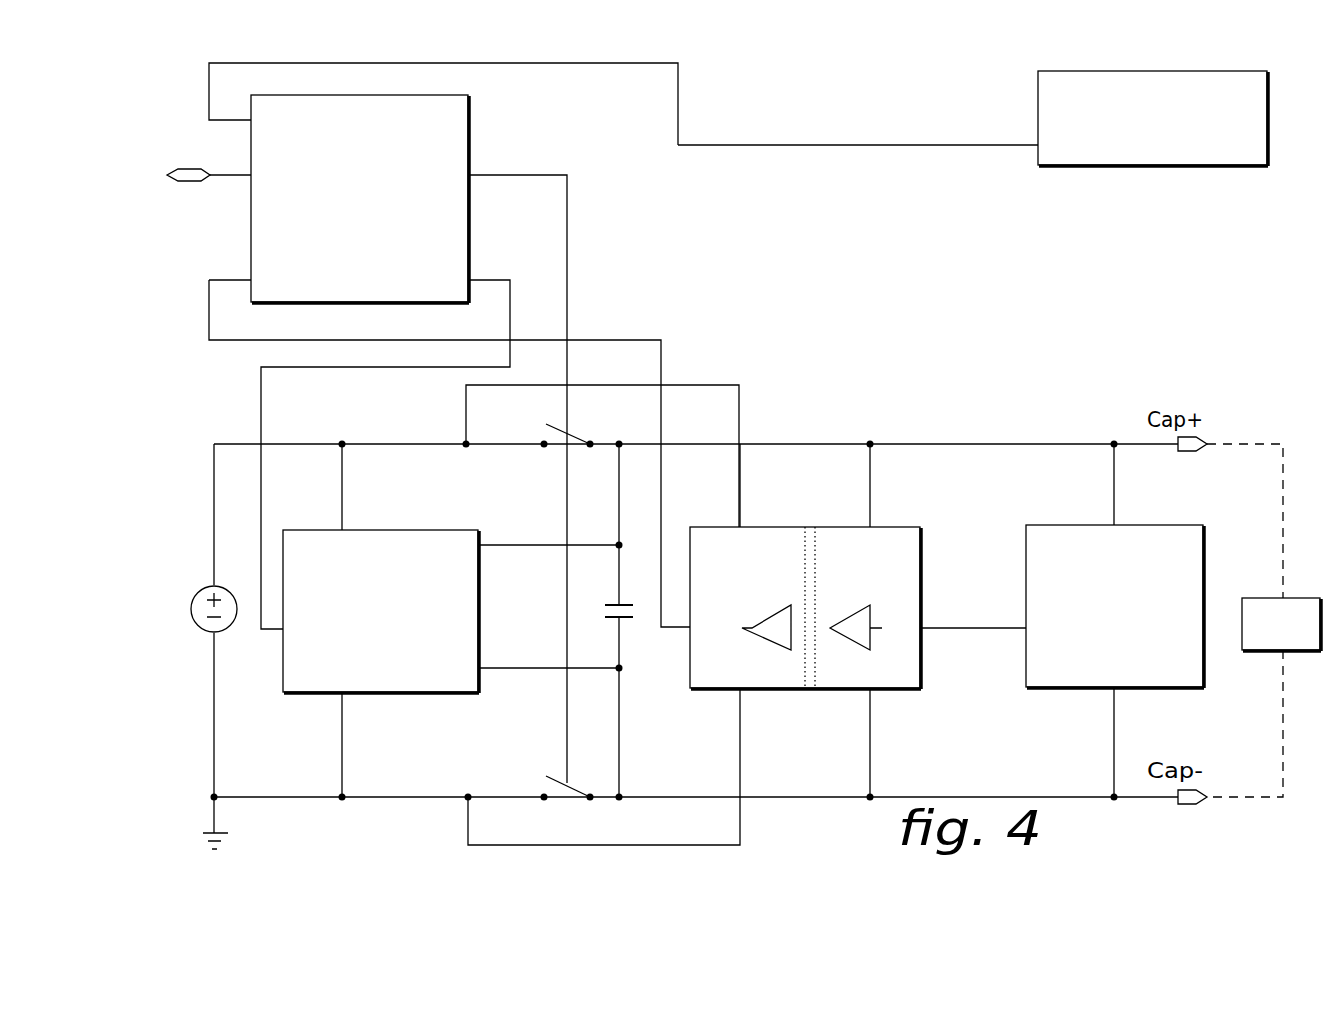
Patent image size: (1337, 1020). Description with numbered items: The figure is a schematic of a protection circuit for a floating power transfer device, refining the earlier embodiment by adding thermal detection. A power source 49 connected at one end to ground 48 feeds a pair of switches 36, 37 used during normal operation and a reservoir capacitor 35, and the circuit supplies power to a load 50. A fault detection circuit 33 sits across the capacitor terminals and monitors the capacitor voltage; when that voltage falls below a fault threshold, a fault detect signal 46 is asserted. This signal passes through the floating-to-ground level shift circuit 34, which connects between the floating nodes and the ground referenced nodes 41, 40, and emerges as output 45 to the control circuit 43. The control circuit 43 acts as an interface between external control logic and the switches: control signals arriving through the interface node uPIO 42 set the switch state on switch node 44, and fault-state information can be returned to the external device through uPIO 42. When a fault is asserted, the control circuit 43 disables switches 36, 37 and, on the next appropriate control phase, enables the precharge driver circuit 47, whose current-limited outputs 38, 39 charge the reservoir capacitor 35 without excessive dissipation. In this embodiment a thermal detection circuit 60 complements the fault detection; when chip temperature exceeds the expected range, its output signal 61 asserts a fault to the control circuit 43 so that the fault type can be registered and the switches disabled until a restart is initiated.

The fault detection circuit 33 is at (1055, 689).
The floating-to-ground level shift circuit 34 is at (893, 689).
The reservoir capacitor 35 is at (636, 617).
The switch 36 is at (561, 453).
The switch 37 is at (566, 800).
The output 38 is at (524, 548).
The output 39 is at (512, 672).
The ground referenced node 40 is at (741, 822).
The ground referenced node 41 is at (712, 386).
The interface node uPIO 42 is at (183, 181).
The control circuit 43 is at (469, 225).
The switch node 44 is at (527, 175).
The output 45 is at (627, 340).
The fault detect signal 46 is at (967, 630).
The precharge driver circuit 47 is at (300, 693).
The ground 48 is at (402, 798).
The power source 49 is at (193, 632).
The load 50 is at (1258, 651).
The thermal detection circuit 60 is at (1165, 166).
The output signal 61 is at (927, 146).